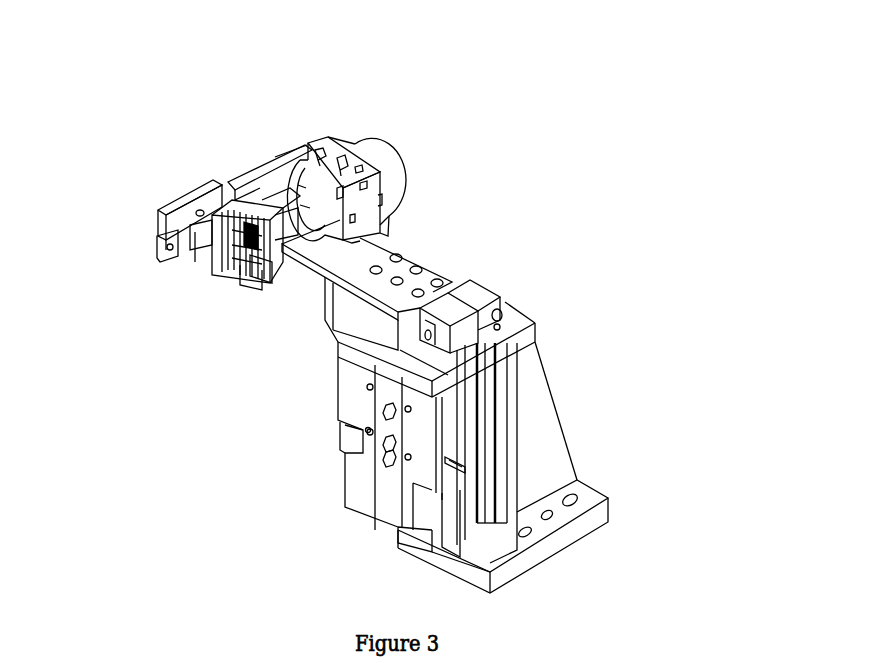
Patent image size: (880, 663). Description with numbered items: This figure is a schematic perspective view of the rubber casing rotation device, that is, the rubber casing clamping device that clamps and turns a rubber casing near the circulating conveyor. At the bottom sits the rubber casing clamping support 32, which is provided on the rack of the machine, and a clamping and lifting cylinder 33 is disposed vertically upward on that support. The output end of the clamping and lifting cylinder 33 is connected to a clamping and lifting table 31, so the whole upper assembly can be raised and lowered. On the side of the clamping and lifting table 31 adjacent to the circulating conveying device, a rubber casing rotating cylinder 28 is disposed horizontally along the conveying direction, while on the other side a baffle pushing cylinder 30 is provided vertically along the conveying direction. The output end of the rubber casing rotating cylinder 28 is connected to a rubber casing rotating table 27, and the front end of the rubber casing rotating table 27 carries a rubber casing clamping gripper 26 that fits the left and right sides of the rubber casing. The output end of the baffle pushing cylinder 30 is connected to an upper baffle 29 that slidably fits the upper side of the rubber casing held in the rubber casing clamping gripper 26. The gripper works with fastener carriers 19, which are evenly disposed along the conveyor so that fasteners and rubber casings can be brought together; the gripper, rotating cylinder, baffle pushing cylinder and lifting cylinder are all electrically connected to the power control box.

The fastener carrier 19 is at (162, 265).
The rubber casing clamping gripper 26 is at (245, 264).
The rubber casing rotating table 27 is at (317, 137).
The rubber casing rotating cylinder 28 is at (368, 150).
The upper baffle 29 is at (357, 278).
The baffle pushing cylinder 30 is at (462, 272).
The clamping and lifting table 31 is at (515, 325).
The rubber casing clamping support 32 is at (537, 438).
The clamping and lifting cylinder 33 is at (427, 435).